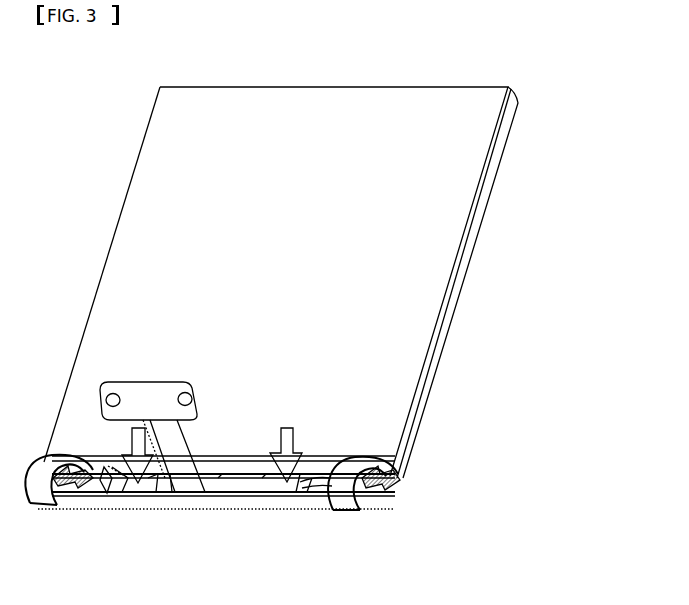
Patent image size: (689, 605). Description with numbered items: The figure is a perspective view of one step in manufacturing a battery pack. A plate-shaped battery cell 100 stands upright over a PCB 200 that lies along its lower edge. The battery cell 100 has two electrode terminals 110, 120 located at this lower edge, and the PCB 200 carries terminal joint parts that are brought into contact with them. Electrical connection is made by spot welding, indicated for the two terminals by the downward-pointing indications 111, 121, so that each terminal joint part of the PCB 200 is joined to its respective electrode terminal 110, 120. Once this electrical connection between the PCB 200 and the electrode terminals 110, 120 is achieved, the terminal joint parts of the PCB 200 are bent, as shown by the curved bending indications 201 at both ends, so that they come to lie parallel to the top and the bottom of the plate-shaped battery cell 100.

The plate-shaped battery cell 100 is at (278, 222).
The PCB 200 is at (206, 505).
The electrode terminal 110 is at (122, 482).
The spot welding 111 is at (132, 443).
The electrode terminal 120 is at (330, 494).
The spot welding 121 is at (290, 440).
The bending 201 is at (43, 497).